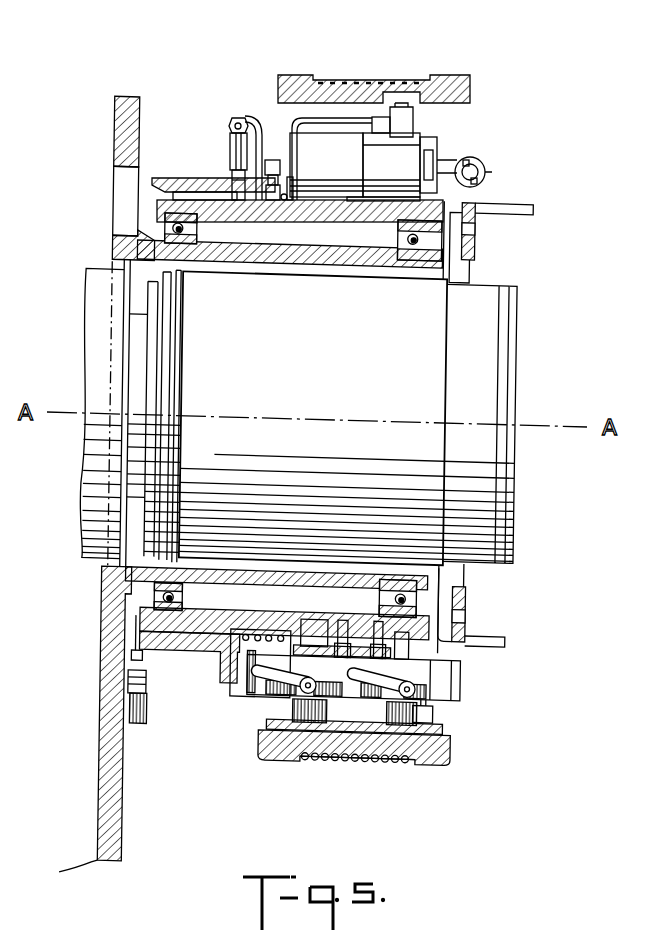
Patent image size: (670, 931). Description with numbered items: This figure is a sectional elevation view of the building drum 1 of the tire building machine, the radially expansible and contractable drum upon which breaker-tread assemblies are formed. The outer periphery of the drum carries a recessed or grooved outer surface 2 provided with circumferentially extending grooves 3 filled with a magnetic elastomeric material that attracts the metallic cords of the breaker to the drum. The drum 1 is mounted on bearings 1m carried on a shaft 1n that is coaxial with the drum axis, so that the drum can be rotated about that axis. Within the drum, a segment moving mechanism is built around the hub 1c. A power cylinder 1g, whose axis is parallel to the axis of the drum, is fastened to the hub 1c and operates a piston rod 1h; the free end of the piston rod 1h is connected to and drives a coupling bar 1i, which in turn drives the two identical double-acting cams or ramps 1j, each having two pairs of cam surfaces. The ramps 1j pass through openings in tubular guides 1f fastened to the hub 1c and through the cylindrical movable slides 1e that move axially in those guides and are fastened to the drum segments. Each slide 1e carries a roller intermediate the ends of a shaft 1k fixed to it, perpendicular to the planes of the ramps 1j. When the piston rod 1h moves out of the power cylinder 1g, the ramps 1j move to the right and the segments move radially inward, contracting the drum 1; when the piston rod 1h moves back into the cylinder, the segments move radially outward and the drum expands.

The building drum 1 is at (470, 90).
The grooved outer surface 2 is at (372, 77).
The circumferentially extending grooves 3 is at (370, 763).
The hub 1c is at (185, 655).
The movable slides 1e is at (327, 708).
The tubular guides 1f is at (270, 719).
The power cylinder 1g is at (413, 143).
The piston rod 1h is at (481, 184).
The coupling bar 1i is at (460, 677).
The double-acting cams or ramps 1j is at (243, 697).
The shaft 1k is at (262, 753).
The bearings 1m is at (166, 228).
The shaft 1n is at (412, 265).